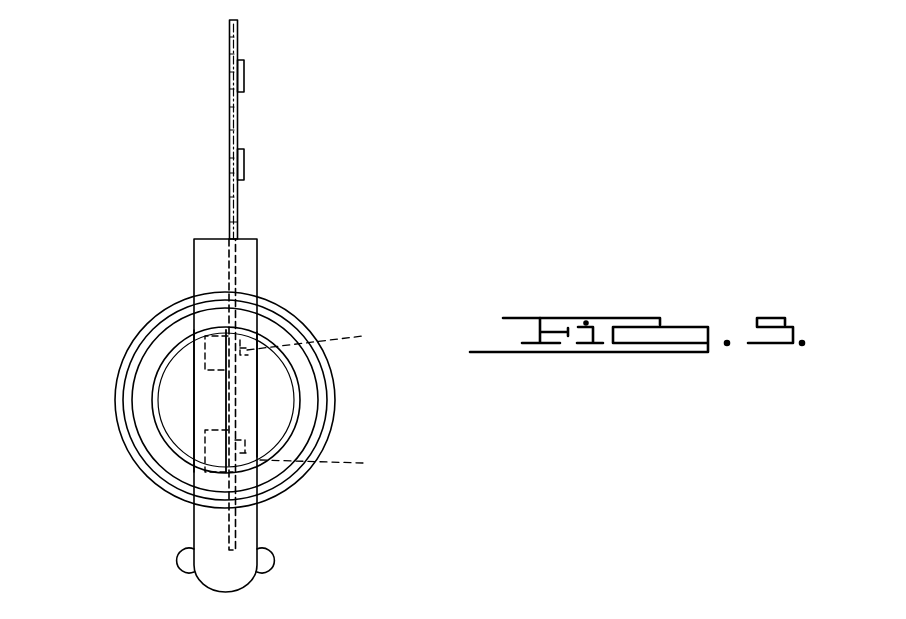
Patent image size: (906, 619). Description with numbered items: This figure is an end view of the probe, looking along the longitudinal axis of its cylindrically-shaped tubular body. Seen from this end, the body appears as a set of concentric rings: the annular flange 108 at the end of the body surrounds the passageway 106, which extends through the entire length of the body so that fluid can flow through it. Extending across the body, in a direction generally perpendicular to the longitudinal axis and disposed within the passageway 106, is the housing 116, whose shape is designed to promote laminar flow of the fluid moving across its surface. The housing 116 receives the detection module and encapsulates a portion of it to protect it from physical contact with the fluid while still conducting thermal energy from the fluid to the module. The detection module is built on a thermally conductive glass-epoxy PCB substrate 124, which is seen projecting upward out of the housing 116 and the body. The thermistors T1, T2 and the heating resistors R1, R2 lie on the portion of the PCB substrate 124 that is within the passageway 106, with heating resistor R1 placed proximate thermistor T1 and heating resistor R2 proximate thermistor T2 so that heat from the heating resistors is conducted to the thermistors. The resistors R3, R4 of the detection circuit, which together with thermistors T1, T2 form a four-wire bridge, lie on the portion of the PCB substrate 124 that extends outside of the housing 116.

The PCB substrate 124 is at (233, 135).
The resistor R4 is at (243, 80).
The resistor R3 is at (244, 164).
The heating resistor R1 is at (213, 343).
The heating resistor R2 is at (245, 455).
The thermistor T1 is at (317, 329).
The thermistor T2 is at (324, 455).
The passageway 106 is at (298, 401).
The annular flange 108 is at (187, 468).
The housing 116 is at (205, 390).